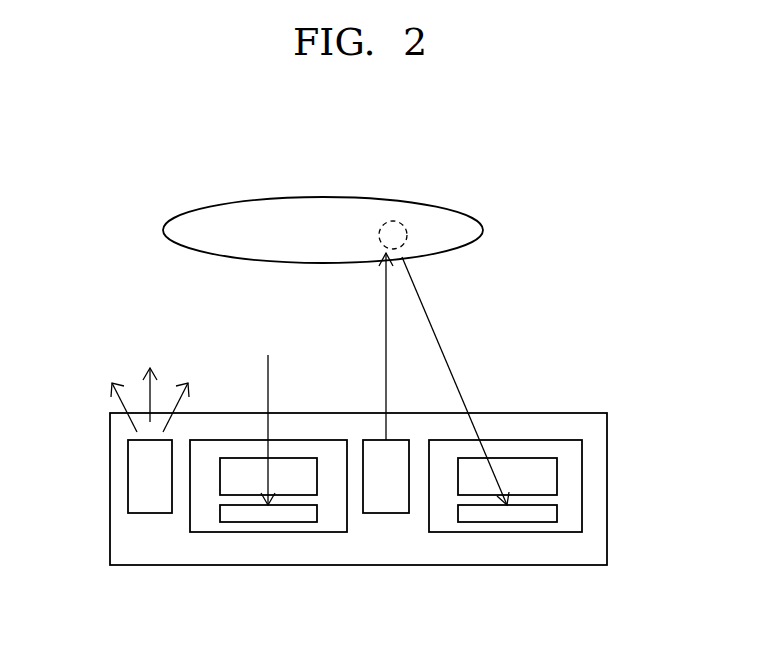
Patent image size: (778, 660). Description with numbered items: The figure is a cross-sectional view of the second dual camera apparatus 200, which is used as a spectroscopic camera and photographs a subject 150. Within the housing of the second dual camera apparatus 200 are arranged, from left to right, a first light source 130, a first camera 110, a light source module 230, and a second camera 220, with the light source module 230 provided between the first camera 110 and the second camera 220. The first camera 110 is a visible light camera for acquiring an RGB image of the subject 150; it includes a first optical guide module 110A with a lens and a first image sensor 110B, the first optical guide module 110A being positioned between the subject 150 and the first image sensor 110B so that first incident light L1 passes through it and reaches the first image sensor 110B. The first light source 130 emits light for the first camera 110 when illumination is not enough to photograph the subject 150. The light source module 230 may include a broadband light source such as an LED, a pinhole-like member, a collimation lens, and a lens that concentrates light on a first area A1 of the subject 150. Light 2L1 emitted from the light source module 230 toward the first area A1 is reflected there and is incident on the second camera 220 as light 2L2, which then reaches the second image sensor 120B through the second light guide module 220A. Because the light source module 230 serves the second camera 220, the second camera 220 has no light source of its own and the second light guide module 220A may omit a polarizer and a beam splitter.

The subject 150 is at (425, 205).
The first area A1 is at (393, 221).
The second dual camera apparatus 200 is at (607, 490).
The first light source 130 is at (128, 476).
The first camera 110 is at (205, 532).
The first optical guide module 110A is at (247, 458).
The first image sensor 110B is at (263, 522).
The light source module 230 is at (385, 513).
The second camera 220 is at (523, 532).
The second light guide module 220A is at (538, 447).
The second image sensor 120B is at (500, 522).
The first incident light L1 is at (268, 372).
The light emitted from the light source module 2L1 is at (386, 333).
The light reflected from the first area 2L2 is at (455, 378).